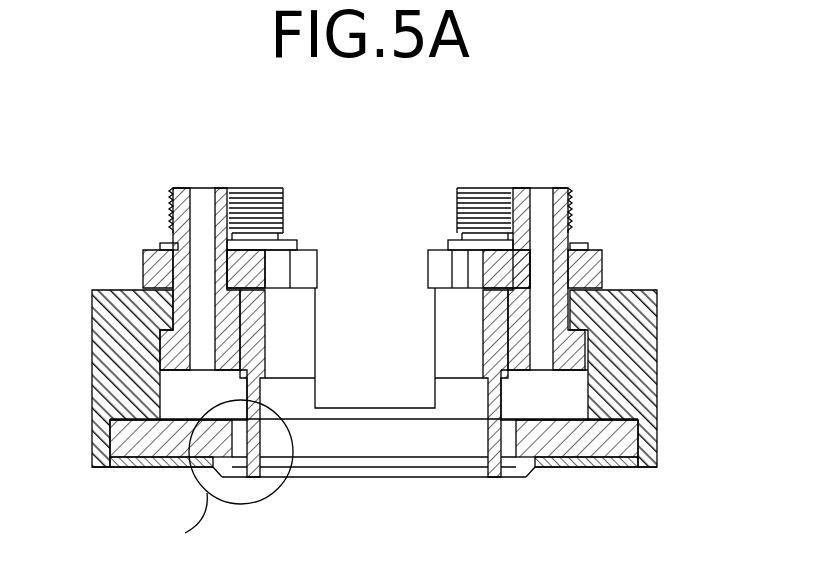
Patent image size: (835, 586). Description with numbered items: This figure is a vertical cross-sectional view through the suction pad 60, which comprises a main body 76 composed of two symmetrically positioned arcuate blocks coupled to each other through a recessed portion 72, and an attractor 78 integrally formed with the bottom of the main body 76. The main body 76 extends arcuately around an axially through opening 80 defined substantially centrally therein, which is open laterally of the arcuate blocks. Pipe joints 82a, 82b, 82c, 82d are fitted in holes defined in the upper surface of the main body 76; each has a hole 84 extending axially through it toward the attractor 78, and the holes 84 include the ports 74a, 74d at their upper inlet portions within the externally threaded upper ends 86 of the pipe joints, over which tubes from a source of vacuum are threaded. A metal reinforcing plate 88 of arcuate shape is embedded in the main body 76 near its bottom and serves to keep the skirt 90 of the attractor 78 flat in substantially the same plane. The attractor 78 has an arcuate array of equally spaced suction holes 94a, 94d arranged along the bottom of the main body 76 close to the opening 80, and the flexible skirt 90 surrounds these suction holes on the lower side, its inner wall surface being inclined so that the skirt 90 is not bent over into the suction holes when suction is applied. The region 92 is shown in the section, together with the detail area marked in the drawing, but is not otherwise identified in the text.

The suction pad 60 is at (624, 149).
The recessed portion 72 is at (316, 335).
The port 74a is at (538, 190).
The port 74d is at (197, 190).
The main body 76 is at (666, 318).
The attractor 78 is at (543, 483).
The opening 80 is at (467, 470).
The pipe joint 82a is at (587, 250).
The pipe joint 82b is at (436, 244).
The pipe joint 82c is at (328, 246).
The pipe joint 82d is at (147, 252).
The hole 84 is at (143, 268).
The externally threaded upper end 86 is at (163, 203).
The metal reinforcing plate 88 is at (120, 447).
The skirt 90 is at (215, 465).
The cavity 92 is at (165, 400).
The suction hole 94a is at (510, 478).
The suction hole 94d is at (242, 477).